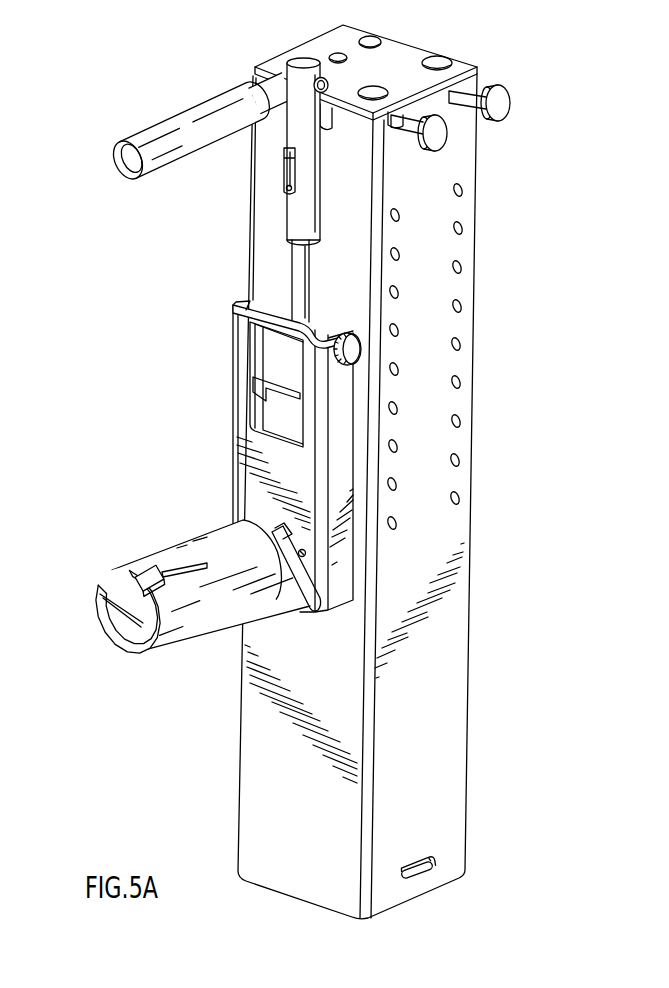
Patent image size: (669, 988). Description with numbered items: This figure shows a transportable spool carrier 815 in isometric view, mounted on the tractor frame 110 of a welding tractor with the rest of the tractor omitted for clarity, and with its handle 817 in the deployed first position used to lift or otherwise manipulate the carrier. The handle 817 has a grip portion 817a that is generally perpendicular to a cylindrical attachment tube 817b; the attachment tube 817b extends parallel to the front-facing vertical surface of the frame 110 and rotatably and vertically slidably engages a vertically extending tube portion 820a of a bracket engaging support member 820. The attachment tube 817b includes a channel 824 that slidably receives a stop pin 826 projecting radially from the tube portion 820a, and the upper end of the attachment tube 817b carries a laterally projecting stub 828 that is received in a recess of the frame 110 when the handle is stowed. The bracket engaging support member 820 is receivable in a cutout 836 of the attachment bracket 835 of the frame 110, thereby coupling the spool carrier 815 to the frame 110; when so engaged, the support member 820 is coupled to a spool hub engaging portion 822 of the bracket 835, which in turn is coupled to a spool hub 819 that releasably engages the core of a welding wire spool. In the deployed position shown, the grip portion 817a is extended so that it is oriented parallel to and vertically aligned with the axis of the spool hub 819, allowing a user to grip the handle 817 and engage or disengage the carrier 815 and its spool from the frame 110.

The tractor frame 110 is at (453, 813).
The transportable spool carrier 815 is at (177, 174).
The handle 817 is at (206, 136).
The grip portion 817a is at (205, 111).
The cylindrical attachment tube 817b is at (303, 113).
The channel 824 is at (284, 165).
The stop pin 826 is at (286, 195).
The vertically extending tube portion 820a is at (295, 280).
The bracket engaging support member 820 is at (352, 338).
The spool hub engaging portion 822 is at (352, 441).
The attachment bracket 835 is at (266, 346).
The cutout 836 is at (361, 350).
The spool hub 819 is at (181, 563).
The laterally projecting stub 828 is at (333, 82).